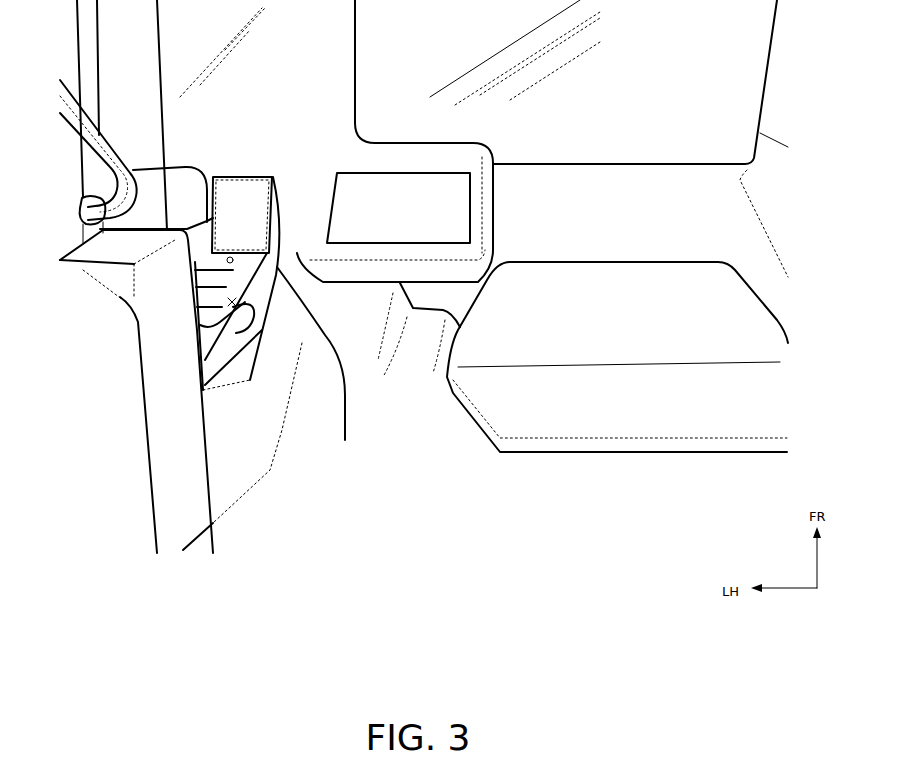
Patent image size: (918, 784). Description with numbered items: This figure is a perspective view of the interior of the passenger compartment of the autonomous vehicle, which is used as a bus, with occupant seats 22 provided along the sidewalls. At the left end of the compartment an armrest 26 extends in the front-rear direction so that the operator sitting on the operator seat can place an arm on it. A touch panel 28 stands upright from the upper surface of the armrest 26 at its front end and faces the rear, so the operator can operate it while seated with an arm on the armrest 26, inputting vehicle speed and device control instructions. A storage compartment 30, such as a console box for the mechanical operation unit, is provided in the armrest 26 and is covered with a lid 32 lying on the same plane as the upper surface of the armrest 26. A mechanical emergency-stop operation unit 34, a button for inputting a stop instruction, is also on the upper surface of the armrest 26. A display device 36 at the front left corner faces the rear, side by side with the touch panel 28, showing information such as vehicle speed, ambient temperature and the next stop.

The occupant seat 22 is at (633, 408).
The armrest 26 is at (345, 440).
The touch panel 28 is at (237, 216).
The storage compartment 30 is at (258, 335).
The lid 32 is at (133, 264).
The emergency-stop operation unit 34 is at (137, 173).
The display device 36 is at (391, 207).